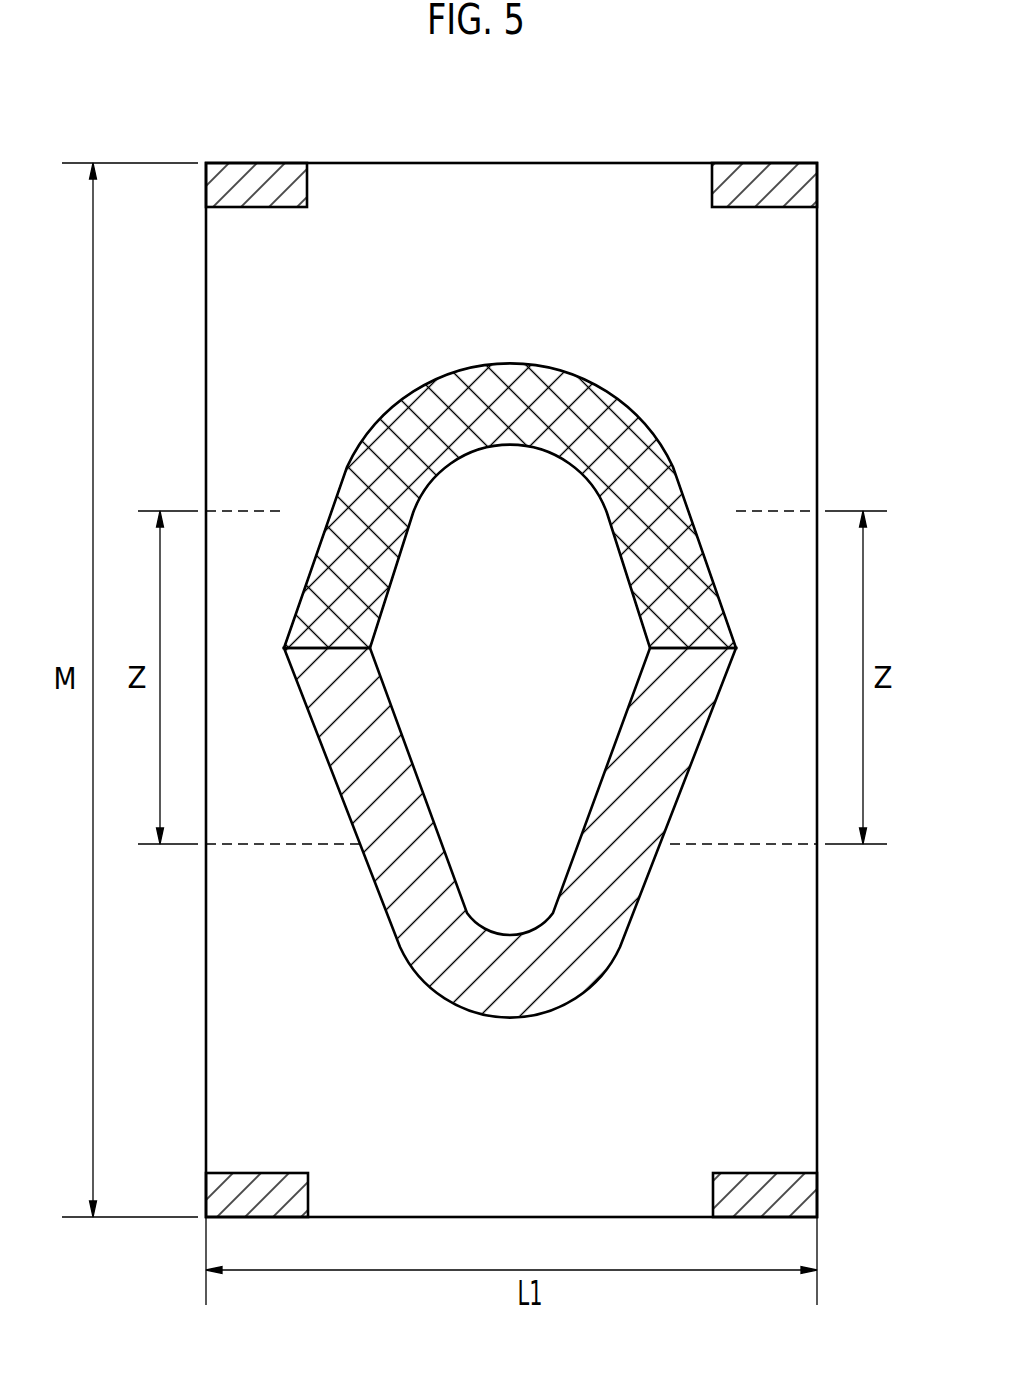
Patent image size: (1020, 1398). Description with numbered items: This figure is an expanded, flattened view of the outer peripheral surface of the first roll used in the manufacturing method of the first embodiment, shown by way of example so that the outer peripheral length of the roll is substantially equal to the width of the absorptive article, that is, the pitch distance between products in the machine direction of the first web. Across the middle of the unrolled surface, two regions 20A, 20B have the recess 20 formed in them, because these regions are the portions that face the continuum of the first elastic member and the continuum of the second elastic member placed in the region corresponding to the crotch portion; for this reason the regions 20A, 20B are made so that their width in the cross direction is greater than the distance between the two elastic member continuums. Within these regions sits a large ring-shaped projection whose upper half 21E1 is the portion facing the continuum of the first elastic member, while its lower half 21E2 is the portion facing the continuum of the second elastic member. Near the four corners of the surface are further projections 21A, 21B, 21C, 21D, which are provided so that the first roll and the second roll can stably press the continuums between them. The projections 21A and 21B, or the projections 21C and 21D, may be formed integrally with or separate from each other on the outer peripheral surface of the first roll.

The recess 20 is at (778, 384).
The region 20A is at (276, 822).
The region 20B is at (760, 822).
The projection 21A is at (258, 176).
The projection 21B is at (748, 173).
The projection 21C is at (265, 1188).
The projection 21D is at (755, 1188).
The upper half of the projection 21E1 is at (592, 401).
The lower half of the projection 21E2 is at (632, 902).